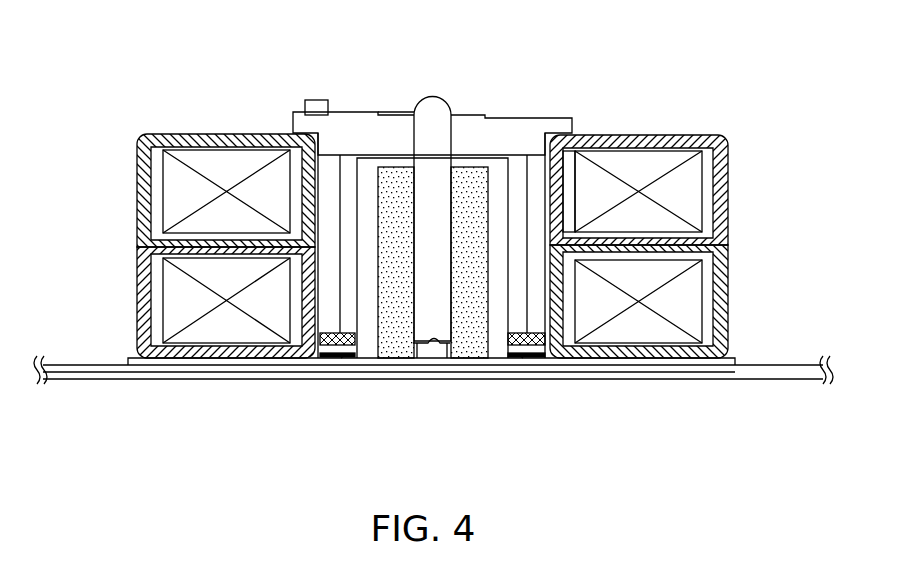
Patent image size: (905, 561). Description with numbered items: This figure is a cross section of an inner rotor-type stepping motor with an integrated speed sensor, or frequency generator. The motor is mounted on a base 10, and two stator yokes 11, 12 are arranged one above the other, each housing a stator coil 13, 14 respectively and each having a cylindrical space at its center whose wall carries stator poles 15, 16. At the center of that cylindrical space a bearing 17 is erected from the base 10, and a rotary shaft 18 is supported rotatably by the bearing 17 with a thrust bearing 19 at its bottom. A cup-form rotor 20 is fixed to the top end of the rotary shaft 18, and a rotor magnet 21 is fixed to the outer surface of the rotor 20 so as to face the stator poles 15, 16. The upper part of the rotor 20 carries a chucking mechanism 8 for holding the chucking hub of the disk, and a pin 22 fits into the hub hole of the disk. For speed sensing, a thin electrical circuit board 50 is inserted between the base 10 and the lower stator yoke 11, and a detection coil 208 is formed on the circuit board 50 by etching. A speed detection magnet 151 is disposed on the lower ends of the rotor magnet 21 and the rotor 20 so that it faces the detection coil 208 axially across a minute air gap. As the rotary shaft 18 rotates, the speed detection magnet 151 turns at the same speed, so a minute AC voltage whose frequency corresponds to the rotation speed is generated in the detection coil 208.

The chucking mechanism 8 is at (397, 122).
The base 10 is at (783, 366).
The stator yoke 11 is at (723, 300).
The stator yoke 12 is at (723, 190).
The stator coil 13 is at (232, 323).
The stator coil 14 is at (687, 175).
The stator pole 15 is at (285, 352).
The stator pole 16 is at (558, 168).
The bearing 17 is at (390, 340).
The rotary shaft 18 is at (443, 118).
The thrust bearing 19 is at (433, 350).
The rotor 20 is at (512, 170).
The rotor magnet 21 is at (330, 182).
The pin 22 is at (313, 100).
The electrical circuit board 50 is at (727, 366).
The speed detection magnet 151 is at (335, 343).
The detection coil 208 is at (345, 357).